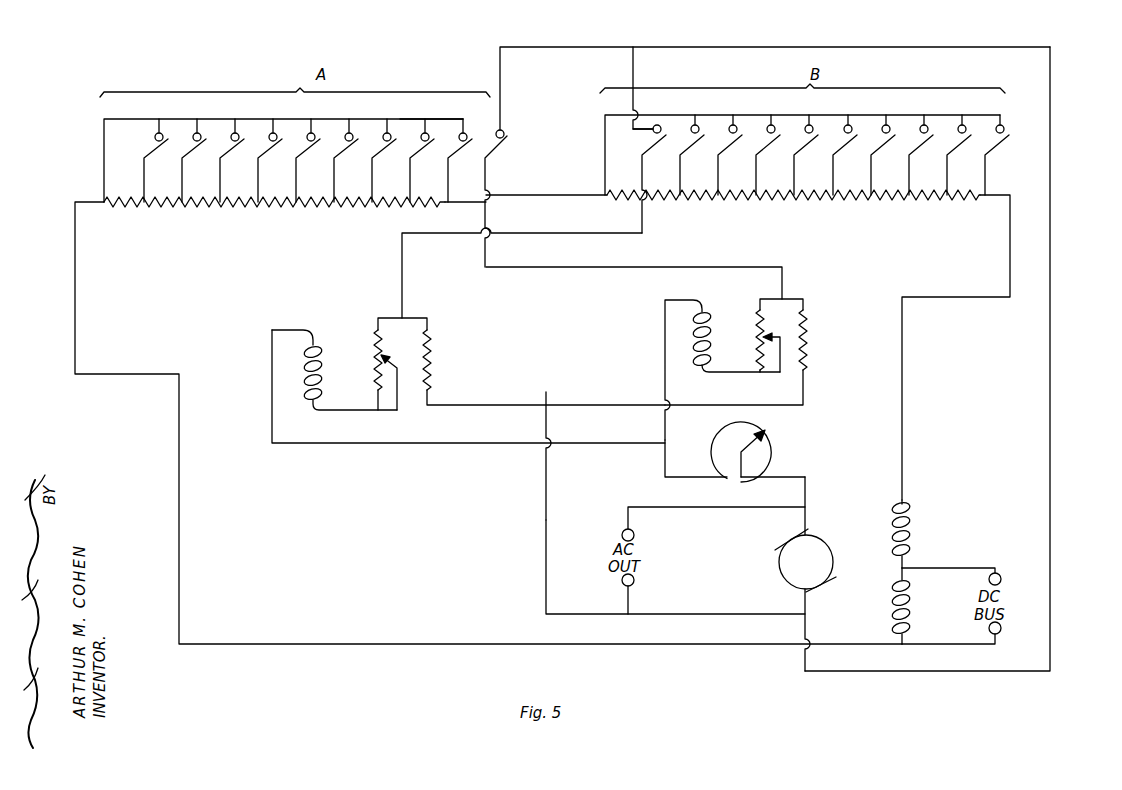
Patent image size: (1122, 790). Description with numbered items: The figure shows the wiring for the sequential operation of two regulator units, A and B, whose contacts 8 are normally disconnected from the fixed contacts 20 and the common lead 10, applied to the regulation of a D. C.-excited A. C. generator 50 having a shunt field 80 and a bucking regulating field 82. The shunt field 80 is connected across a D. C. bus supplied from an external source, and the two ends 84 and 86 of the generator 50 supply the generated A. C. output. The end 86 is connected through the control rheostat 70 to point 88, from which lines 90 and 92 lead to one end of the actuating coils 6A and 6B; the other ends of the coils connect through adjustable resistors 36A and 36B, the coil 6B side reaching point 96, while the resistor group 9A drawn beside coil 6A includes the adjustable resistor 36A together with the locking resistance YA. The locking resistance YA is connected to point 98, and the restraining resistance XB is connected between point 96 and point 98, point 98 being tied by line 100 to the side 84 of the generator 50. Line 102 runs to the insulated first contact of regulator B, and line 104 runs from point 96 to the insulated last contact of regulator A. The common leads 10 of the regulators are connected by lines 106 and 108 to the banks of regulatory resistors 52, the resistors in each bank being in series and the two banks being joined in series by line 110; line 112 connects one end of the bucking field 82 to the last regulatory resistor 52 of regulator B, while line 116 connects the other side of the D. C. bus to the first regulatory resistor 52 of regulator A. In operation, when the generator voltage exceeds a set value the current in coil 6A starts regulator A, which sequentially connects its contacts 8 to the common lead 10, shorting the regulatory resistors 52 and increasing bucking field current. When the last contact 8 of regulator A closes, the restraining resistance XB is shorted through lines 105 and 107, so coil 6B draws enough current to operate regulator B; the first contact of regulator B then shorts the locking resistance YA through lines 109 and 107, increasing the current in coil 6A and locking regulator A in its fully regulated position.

The actuating coil 6A is at (320, 375).
The actuating coil 6B is at (710, 340).
The contacts 8 is at (391, 133).
The resistor network A 9A is at (498, 351).
The common lead 10 is at (425, 118).
The fixed contacts 20 is at (199, 132).
The adjustable resistor 36A is at (378, 345).
The adjustable resistor 36B is at (757, 318).
The generator 50 is at (790, 570).
The regulatory resistors 52 is at (245, 208).
The control rheostat 70 is at (771, 447).
The shunt field 80 is at (912, 604).
The bucking regulating field 82 is at (908, 522).
The end of generator 84 is at (808, 592).
The end of generator 86 is at (808, 530).
The point 88 is at (665, 440).
The line 90 is at (380, 443).
The line 92 is at (702, 370).
The point 96 is at (755, 336).
The point 98 is at (546, 392).
The line 100 is at (546, 520).
The line 102 is at (543, 233).
The line 104 is at (697, 267).
The line 105 is at (500, 78).
The line 106 is at (104, 160).
The line 107 is at (1050, 265).
The line 108 is at (605, 158).
The line 109 is at (633, 70).
The line 110 is at (533, 195).
The line 112 is at (902, 395).
The line 116 is at (325, 644).
The restraining resistance XB is at (807, 333).
The locking resistance YA is at (430, 352).